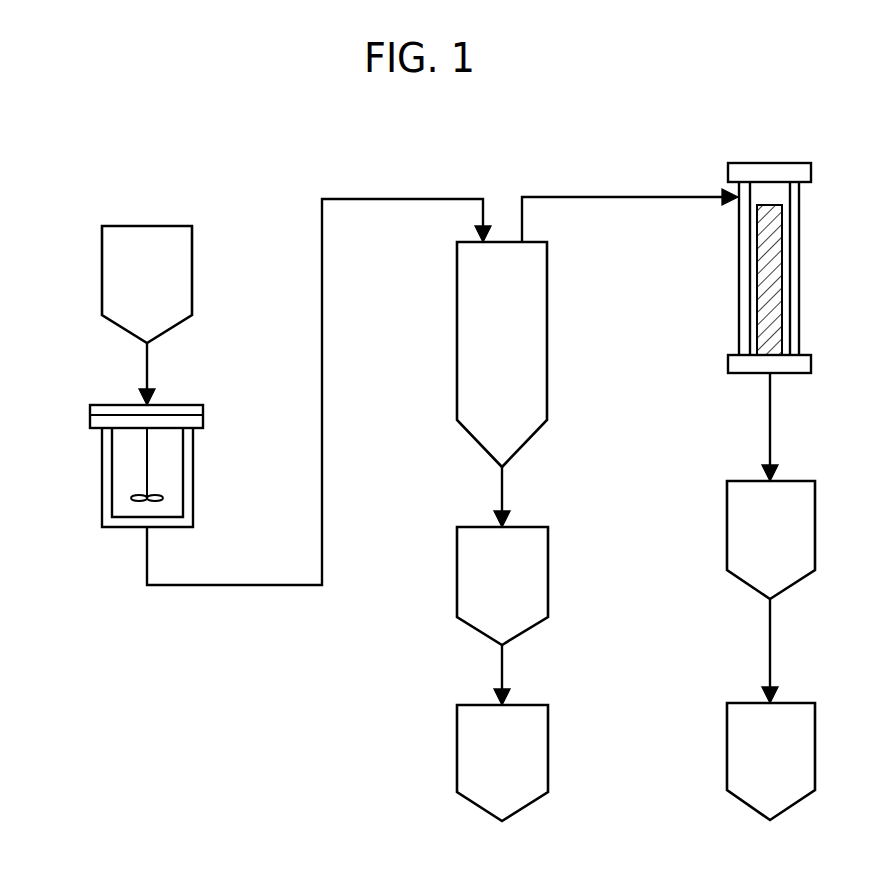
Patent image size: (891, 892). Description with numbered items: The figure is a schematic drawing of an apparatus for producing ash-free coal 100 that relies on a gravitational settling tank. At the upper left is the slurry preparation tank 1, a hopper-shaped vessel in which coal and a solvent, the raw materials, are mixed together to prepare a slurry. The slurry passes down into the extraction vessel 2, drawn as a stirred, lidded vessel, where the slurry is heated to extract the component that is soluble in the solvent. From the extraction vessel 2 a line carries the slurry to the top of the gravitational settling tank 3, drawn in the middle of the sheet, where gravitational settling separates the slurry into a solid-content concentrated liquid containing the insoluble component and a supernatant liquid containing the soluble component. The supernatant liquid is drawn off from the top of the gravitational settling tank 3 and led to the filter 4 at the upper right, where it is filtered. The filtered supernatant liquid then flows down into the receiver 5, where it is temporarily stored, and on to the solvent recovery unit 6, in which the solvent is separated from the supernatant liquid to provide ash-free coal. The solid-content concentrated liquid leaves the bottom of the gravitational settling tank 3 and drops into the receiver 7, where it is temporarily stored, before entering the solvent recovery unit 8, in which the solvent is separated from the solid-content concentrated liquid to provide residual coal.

The apparatus for producing ash-free coal 100 is at (112, 122).
The slurry preparation tank 1 is at (112, 260).
The extraction vessel 2 is at (118, 407).
The gravitational settling tank 3 is at (478, 290).
The filter 4 is at (794, 173).
The receiver 5 is at (795, 525).
The solvent recovery unit 6 is at (797, 737).
The receiver 7 is at (480, 570).
The solvent recovery unit 8 is at (480, 743).